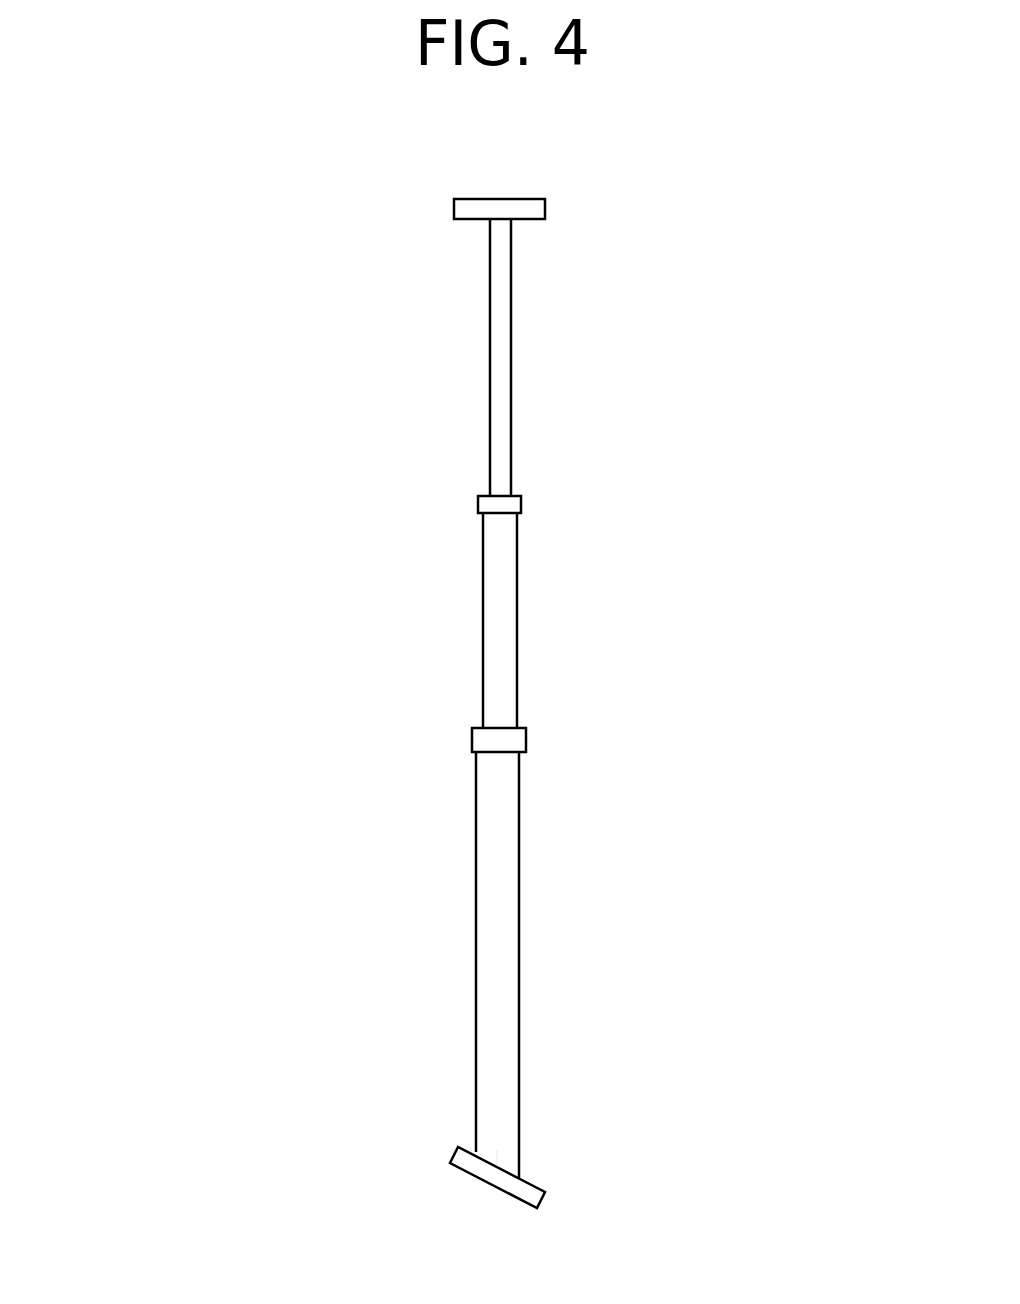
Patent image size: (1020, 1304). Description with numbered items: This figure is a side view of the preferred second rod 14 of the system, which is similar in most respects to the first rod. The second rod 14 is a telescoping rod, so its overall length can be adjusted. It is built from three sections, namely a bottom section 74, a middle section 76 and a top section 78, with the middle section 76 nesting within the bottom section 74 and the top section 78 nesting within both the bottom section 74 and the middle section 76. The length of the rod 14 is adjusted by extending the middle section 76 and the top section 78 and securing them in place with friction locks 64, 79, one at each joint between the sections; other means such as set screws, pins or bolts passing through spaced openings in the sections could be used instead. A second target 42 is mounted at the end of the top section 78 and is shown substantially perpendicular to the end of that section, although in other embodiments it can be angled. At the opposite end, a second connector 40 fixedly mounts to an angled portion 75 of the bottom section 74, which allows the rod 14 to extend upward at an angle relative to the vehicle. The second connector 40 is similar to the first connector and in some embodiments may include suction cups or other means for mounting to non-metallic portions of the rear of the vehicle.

The second rod 14 is at (457, 703).
The second target 42 is at (632, 265).
The top section 78 is at (320, 357).
The friction lock 79 is at (656, 546).
The middle section 76 is at (316, 559).
The friction lock 64 is at (322, 661).
The bottom section 74 is at (318, 954).
The angled portion 75 is at (677, 1074).
The second connector 40 is at (301, 1089).